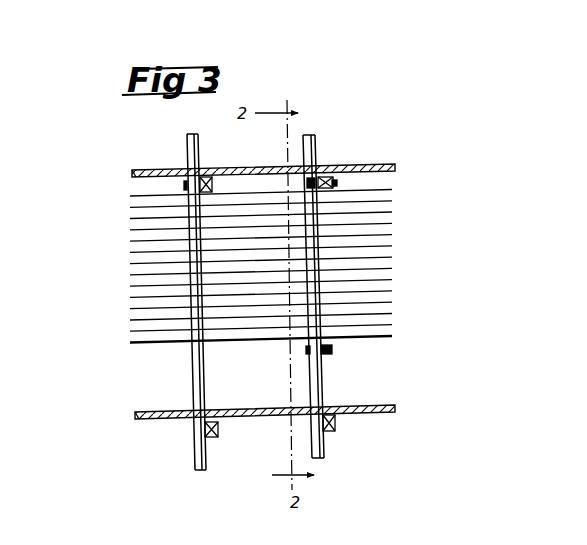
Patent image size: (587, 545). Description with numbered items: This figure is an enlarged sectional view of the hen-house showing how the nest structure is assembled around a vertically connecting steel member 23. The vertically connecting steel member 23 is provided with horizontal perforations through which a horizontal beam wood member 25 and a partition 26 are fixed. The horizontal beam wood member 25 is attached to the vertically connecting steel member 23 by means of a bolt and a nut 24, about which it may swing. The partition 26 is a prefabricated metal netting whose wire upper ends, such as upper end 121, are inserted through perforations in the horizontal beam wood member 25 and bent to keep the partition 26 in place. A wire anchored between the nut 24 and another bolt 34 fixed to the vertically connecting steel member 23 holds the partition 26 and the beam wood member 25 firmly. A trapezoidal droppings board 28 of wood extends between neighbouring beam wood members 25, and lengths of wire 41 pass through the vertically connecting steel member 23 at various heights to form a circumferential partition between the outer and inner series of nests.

The upper end of netting wire 121 is at (212, 186).
The trapezoidal droppings board 28 is at (253, 170).
The vertically connecting steel member 23 is at (306, 148).
The horizontal beam wood member 25 is at (327, 180).
The nut 24 is at (335, 182).
The partition 26 is at (323, 241).
The length of wire 41 is at (142, 253).
The bolt 34 is at (330, 350).